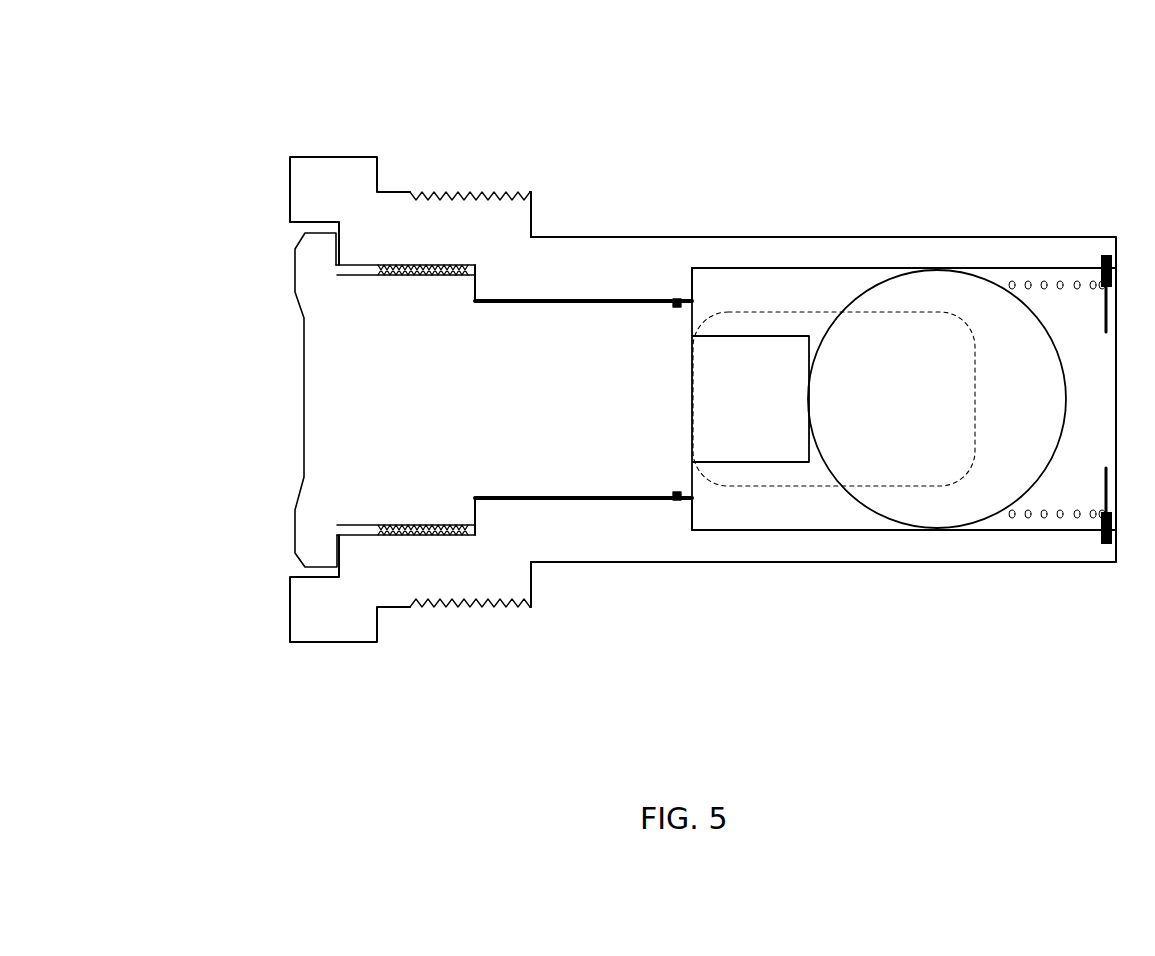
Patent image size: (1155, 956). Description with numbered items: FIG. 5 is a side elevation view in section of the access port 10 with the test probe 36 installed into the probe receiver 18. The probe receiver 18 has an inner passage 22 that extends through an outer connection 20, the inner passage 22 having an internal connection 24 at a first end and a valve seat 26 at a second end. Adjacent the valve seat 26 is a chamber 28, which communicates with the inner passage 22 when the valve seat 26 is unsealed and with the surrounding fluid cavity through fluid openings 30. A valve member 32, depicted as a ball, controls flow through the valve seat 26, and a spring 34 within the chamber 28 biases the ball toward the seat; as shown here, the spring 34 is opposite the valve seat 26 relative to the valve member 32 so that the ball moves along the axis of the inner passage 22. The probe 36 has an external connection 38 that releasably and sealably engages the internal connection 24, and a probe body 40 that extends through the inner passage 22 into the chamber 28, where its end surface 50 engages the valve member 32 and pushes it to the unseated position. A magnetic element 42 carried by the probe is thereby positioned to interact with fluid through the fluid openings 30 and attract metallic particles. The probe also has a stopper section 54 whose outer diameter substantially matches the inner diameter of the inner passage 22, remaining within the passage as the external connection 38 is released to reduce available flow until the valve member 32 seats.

The access port 10 is at (937, 122).
The probe receiver 18 is at (510, 223).
The outer connection 20 is at (443, 192).
The inner passage 22 is at (588, 300).
The internal connection 24 is at (447, 535).
The valve seat 26 is at (688, 510).
The chamber 28 is at (1045, 487).
The fluid openings 30 is at (823, 483).
The valve member 32 is at (937, 457).
The spring 34 is at (1077, 283).
The probe 36 is at (360, 373).
The external connection 38 is at (397, 535).
The probe body 40 is at (648, 500).
The magnetic element 42 is at (757, 340).
The end surface 50 is at (813, 385).
The stopper section 54 is at (606, 450).